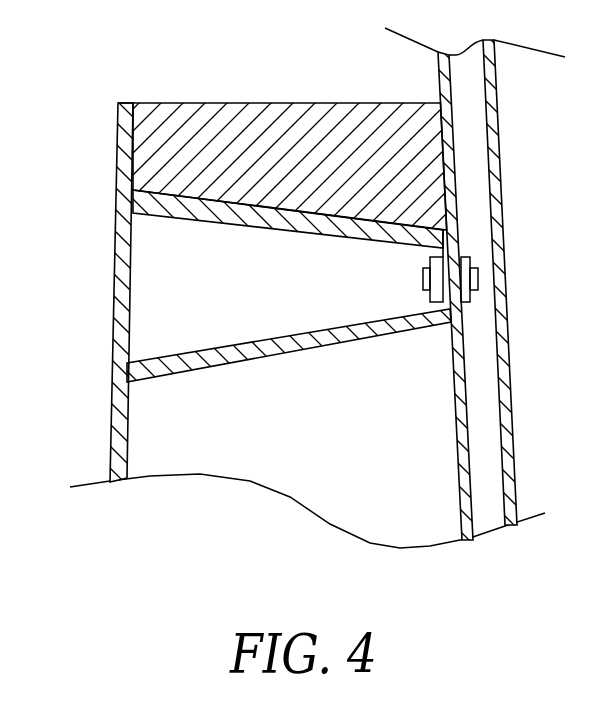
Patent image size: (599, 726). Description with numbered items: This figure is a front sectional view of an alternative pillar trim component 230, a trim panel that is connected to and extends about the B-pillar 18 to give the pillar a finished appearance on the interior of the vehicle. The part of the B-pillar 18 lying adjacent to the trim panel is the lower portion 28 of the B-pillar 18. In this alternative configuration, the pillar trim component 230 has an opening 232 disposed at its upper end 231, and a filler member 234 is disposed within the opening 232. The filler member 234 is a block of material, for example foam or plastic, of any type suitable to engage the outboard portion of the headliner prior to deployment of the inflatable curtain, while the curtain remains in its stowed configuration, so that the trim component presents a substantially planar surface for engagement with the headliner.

The B-pillar 18 is at (508, 313).
The lower portion 28 is at (455, 382).
The alternative pillar trim component 230 is at (291, 268).
The upper end 231 is at (122, 102).
The opening 232 is at (143, 102).
The filler member 234 is at (303, 113).